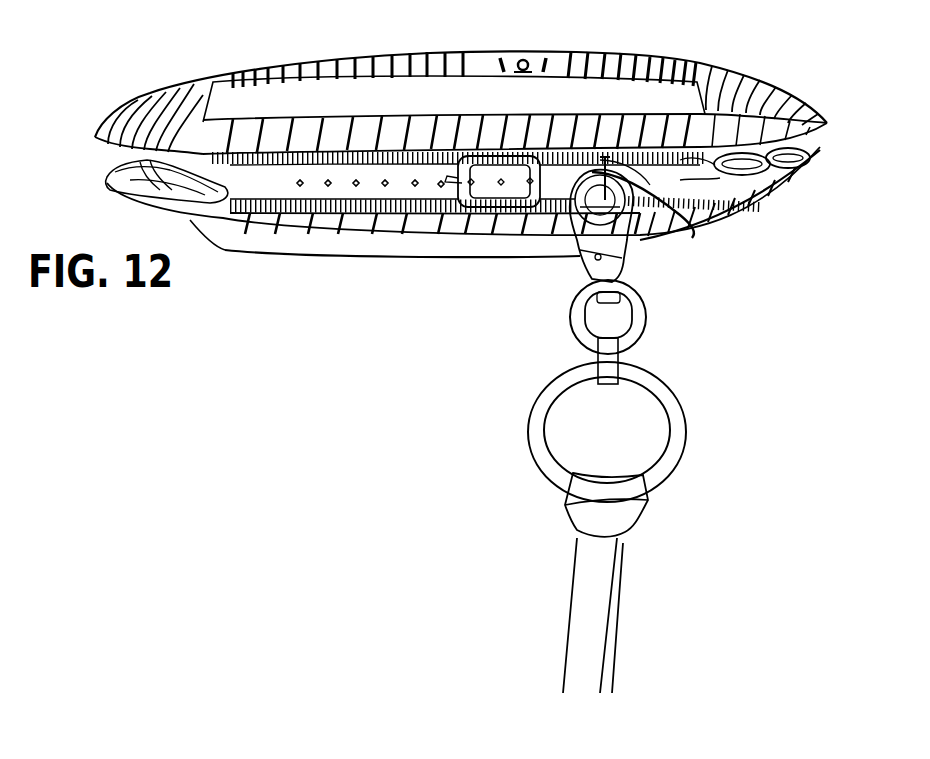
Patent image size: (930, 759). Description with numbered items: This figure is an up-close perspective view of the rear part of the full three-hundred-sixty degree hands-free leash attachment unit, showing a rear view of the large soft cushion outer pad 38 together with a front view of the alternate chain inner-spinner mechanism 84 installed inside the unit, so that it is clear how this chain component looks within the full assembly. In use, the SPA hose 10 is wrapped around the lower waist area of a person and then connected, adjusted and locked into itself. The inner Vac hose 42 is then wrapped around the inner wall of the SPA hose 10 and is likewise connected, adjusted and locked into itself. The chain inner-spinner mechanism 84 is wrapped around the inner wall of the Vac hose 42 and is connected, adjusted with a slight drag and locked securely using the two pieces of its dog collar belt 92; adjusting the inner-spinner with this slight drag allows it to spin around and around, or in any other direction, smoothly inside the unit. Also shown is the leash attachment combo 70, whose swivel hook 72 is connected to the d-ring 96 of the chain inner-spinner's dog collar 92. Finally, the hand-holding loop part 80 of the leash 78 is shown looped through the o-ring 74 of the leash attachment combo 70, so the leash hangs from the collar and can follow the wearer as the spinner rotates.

The SPA hose 10 is at (178, 86).
The large soft cushion outer pad 38 is at (650, 93).
The inner Vac hose 42 is at (757, 210).
The leash attachment combo 70 is at (650, 357).
The swivel hook 72 is at (627, 218).
The o-ring 74 is at (673, 415).
The leash 78 is at (583, 607).
The hand-holding loop part 80 is at (585, 483).
The chain inner-spinner mechanism 84 is at (333, 191).
The dog collar belt 92 is at (463, 193).
The d-ring 96 is at (692, 237).